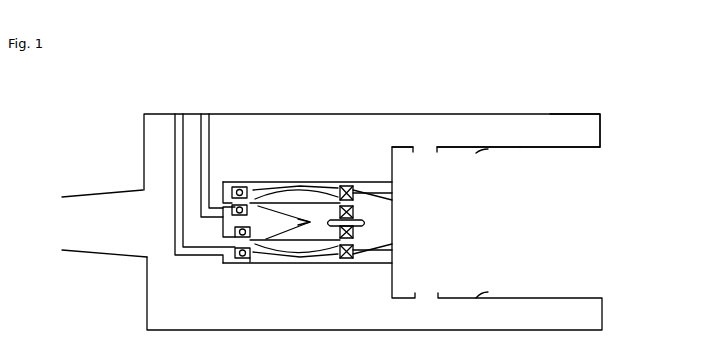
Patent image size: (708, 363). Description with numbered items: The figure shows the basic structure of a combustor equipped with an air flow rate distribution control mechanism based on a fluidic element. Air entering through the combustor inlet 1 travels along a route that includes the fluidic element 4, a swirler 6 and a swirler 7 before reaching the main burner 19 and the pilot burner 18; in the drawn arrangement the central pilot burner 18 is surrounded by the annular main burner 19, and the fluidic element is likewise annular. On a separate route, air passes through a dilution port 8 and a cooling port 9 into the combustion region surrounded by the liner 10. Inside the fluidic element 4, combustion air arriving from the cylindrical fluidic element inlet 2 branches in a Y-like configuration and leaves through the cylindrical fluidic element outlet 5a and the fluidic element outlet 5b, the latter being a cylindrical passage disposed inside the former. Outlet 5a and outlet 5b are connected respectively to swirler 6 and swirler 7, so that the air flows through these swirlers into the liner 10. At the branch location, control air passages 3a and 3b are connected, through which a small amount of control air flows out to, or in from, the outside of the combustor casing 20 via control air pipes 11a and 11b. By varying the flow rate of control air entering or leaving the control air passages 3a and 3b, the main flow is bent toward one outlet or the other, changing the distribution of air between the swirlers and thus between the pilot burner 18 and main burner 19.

The combustor inlet 1 is at (104, 223).
The fluidic element inlet 2 is at (234, 186).
The control air passage 3a is at (250, 192).
The control air passage 3b is at (233, 218).
The fluidic element 4 is at (262, 262).
The fluidic element outlet 5a is at (309, 179).
The fluidic element outlet 5b is at (315, 183).
The swirler 6 is at (351, 190).
The swirler 7 is at (306, 263).
The dilution port 8 is at (423, 150).
The cooling port 9 is at (477, 151).
The liner 10 is at (531, 143).
The control air pipe 11a is at (175, 142).
The control air pipe 11b is at (203, 112).
The pilot burner 18 is at (378, 222).
The main burner 19 is at (354, 192).
The combustor casing 20 is at (578, 123).